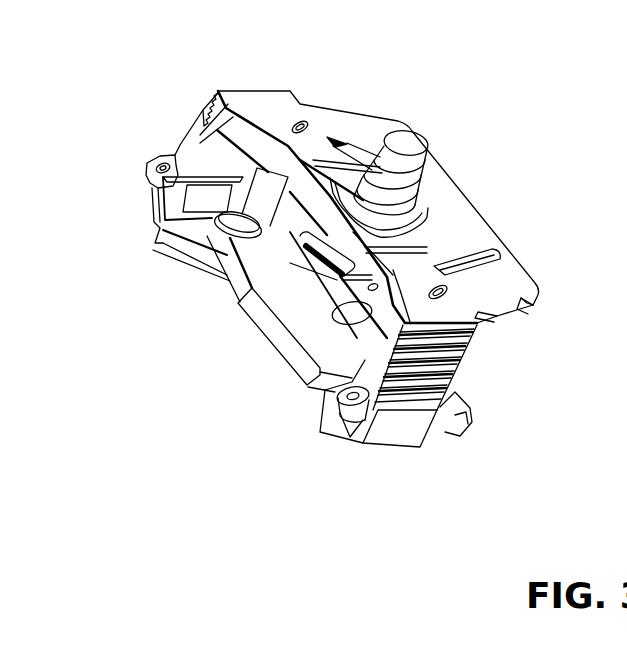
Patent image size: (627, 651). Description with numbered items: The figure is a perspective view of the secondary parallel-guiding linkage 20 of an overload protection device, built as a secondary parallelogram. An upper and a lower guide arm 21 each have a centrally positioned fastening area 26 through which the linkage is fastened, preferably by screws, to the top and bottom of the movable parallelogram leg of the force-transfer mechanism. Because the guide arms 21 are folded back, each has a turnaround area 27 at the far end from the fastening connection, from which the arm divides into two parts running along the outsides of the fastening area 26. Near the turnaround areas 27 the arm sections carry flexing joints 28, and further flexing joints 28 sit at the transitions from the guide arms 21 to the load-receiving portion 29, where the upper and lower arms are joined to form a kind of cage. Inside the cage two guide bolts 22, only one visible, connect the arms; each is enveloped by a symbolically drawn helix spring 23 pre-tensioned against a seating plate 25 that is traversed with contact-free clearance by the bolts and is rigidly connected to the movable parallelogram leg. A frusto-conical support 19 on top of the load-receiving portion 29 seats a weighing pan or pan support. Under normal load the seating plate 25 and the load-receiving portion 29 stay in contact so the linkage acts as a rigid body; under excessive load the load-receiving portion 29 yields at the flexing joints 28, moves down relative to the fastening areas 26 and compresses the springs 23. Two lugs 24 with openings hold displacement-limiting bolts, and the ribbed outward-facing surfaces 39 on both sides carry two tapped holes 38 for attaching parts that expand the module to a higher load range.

The frusto-conical support 19 is at (413, 144).
The secondary parallel-guiding linkage 20 is at (179, 80).
The guide arm 21 is at (345, 120).
The guide bolt 22 is at (255, 193).
The helix spring 23 is at (230, 238).
The lug 24 is at (151, 182).
The seating plate 25 is at (307, 307).
The fastening area 26 is at (443, 212).
The turnaround area 27 is at (399, 119).
The flexing joint 28 is at (330, 137).
The load-receiving portion 29 is at (302, 143).
The tapped hole 38 is at (358, 383).
The outward-facing surface 39 is at (208, 107).